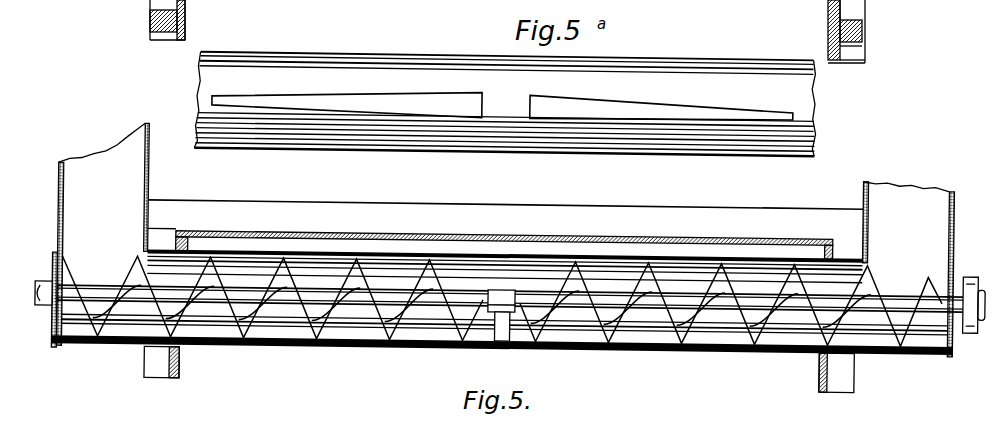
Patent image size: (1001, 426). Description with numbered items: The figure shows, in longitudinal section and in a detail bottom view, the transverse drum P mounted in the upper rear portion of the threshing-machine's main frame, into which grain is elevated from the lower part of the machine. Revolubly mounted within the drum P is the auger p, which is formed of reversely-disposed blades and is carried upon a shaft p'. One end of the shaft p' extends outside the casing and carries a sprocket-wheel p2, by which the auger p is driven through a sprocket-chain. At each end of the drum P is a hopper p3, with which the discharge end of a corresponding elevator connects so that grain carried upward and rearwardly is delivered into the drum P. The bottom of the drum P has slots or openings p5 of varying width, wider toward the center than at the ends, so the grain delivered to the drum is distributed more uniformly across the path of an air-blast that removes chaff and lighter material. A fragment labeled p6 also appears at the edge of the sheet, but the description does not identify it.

In FIG. 5A, the transverse drum P is at (662, 96).
In FIG. 5, the transverse drum P is at (333, 270).
In FIG. 5, the auger p is at (502, 326).
In FIG. 5, the auger shaft p' is at (499, 328).
In FIG. 5, the sprocket-wheel p2 is at (968, 279).
In FIG. 5, the hopper p3 is at (505, 258).
In FIG. 5A, the slots or openings p5 is at (470, 108).
In FIG. 5, the slots or openings p5 is at (655, 349).
In FIG. 5A, the upper member (fragment) p6 is at (153, 20).